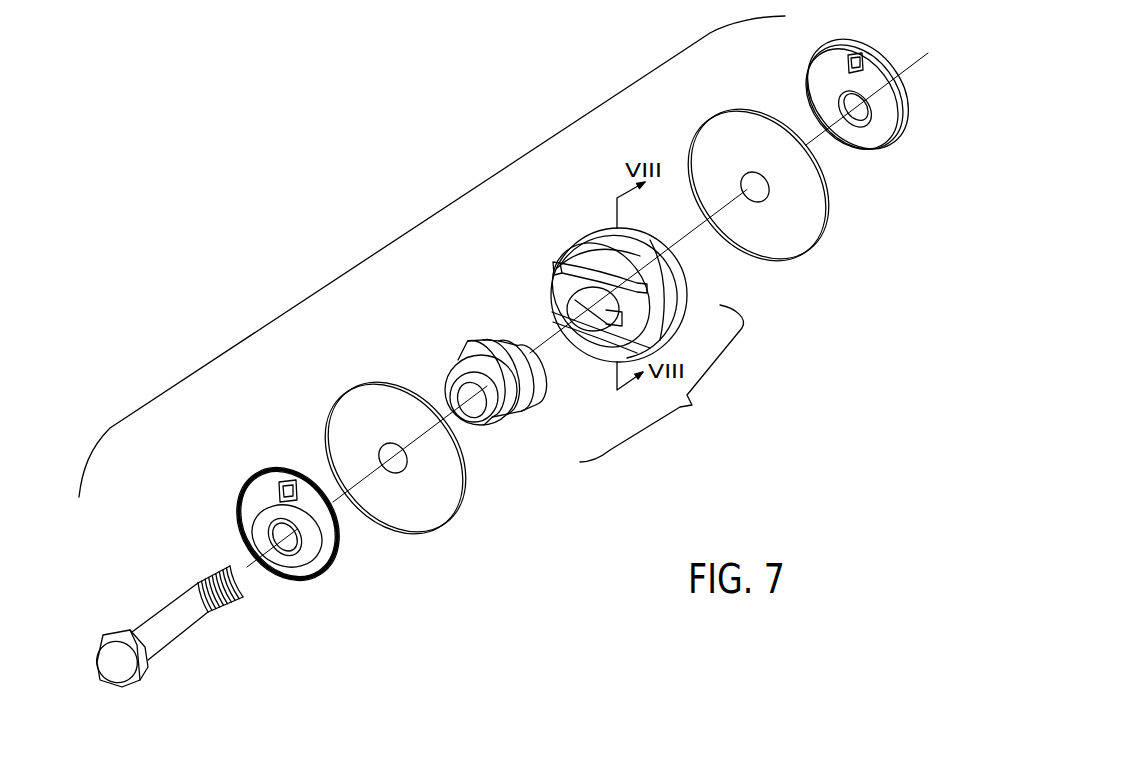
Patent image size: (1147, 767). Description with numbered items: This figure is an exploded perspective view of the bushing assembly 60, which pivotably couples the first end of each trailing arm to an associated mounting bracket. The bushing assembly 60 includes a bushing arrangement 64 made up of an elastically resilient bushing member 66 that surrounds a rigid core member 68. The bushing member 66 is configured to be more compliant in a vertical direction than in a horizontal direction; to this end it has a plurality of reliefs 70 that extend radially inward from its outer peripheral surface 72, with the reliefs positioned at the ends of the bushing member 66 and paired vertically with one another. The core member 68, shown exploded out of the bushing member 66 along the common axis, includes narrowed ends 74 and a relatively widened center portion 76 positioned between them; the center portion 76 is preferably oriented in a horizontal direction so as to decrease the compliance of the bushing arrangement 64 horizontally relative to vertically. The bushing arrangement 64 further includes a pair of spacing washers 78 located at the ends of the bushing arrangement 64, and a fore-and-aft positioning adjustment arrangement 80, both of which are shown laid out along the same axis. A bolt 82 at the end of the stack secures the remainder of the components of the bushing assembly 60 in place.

The bushing assembly 60 is at (406, 232).
The bushing arrangement 64 is at (661, 383).
The bushing member 66 is at (584, 280).
The core member 68 is at (487, 401).
The reliefs 70 is at (590, 260).
The outer peripheral surface 72 is at (633, 243).
The narrowed ends 74 is at (497, 418).
The center portion 76 is at (531, 399).
The spacing washers 78 is at (337, 395).
The fore-and-aft positioning adjustment arrangement 80 is at (240, 478).
The bolt 82 is at (158, 600).